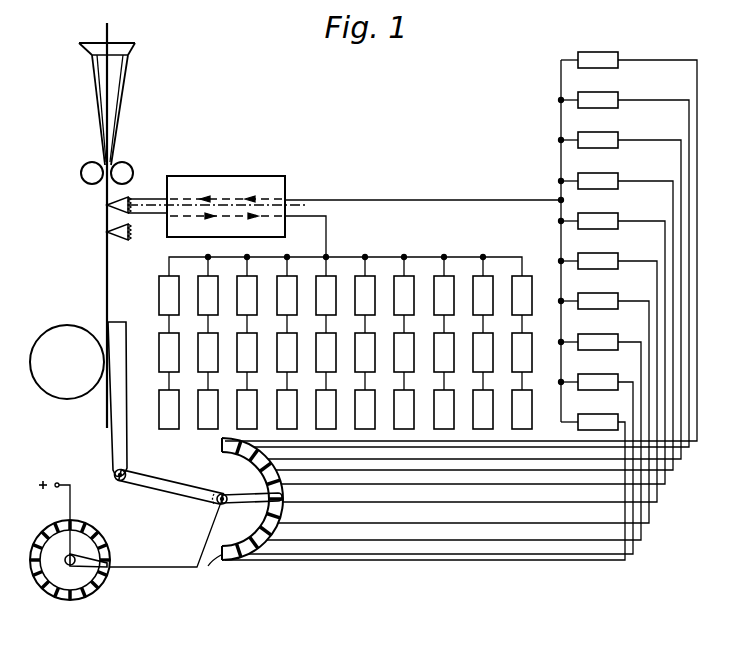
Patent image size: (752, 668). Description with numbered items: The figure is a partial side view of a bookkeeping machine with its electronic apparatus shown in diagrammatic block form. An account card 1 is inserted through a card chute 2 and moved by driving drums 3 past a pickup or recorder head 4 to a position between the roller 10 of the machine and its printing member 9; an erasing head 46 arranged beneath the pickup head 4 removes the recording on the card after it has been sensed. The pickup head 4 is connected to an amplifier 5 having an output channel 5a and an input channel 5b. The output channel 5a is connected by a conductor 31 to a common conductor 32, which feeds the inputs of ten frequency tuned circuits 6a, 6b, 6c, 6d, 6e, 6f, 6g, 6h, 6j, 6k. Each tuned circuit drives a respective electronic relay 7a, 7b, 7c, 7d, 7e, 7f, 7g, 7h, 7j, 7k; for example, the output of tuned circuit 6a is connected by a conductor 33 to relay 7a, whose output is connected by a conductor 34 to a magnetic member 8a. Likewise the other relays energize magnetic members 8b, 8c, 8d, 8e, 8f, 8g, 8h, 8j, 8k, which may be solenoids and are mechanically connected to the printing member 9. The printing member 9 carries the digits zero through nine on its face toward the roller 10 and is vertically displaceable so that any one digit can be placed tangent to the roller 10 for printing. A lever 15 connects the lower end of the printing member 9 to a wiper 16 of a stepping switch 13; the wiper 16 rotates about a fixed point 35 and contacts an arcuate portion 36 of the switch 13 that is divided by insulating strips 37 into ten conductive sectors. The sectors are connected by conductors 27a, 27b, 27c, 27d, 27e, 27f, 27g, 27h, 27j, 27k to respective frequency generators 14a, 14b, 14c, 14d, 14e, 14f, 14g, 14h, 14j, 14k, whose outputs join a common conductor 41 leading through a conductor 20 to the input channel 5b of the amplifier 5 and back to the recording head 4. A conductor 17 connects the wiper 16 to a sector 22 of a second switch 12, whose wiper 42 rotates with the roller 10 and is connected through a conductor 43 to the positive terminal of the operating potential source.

The account card 1 is at (108, 85).
The card chute 2 is at (115, 138).
The driving drums 3 is at (84, 171).
The pickup or recorder head 4 is at (107, 206).
The erasing head 46 is at (116, 236).
The amplifier 5 is at (261, 192).
The output channel 5a is at (196, 225).
The input channel 5b is at (231, 180).
The conductor 20 is at (452, 200).
The conductor 31 is at (329, 227).
The common conductor 32 is at (352, 256).
The conductor 33 is at (168, 323).
The conductor 34 is at (168, 376).
The frequency tuned circuit 6a is at (169, 295).
The frequency tuned circuit 6b is at (208, 286).
The frequency tuned circuit 6c is at (247, 286).
The frequency tuned circuit 6d is at (287, 286).
The frequency tuned circuit 6e is at (326, 286).
The frequency tuned circuit 6f is at (365, 286).
The frequency tuned circuit 6g is at (404, 286).
The frequency tuned circuit 6h is at (444, 286).
The frequency tuned circuit 6j is at (483, 286).
The frequency tuned circuit 6k is at (522, 295).
The electronic relay 7a is at (169, 343).
The electronic relay 7b is at (208, 343).
The electronic relay 7c is at (247, 343).
The electronic relay 7d is at (287, 343).
The electronic relay 7e is at (326, 343).
The electronic relay 7f is at (365, 343).
The electronic relay 7g is at (404, 343).
The electronic relay 7h is at (444, 343).
The electronic relay 7j is at (483, 343).
The electronic relay 7k is at (522, 343).
The magnetic member 8a is at (169, 400).
The magnetic member 8b is at (208, 400).
The magnetic member 8c is at (247, 400).
The magnetic member 8d is at (287, 400).
The magnetic member 8e is at (326, 400).
The magnetic member 8f is at (365, 400).
The magnetic member 8g is at (404, 400).
The magnetic member 8h is at (444, 400).
The magnetic member 8j is at (483, 400).
The magnetic member 8k is at (522, 400).
The common conductor 41 is at (561, 85).
The frequency generator 14a is at (589, 60).
The frequency generator 14b is at (589, 100).
The frequency generator 14c is at (589, 140).
The frequency generator 14d is at (589, 181).
The frequency generator 14e is at (589, 221).
The frequency generator 14f is at (589, 261).
The frequency generator 14g is at (589, 301).
The frequency generator 14h is at (589, 342).
The frequency generator 14j is at (589, 382).
The frequency generator 14k is at (589, 422).
The conductor 27a is at (641, 58).
The conductor 27b is at (639, 99).
The conductor 27c is at (639, 139).
The conductor 27d is at (639, 180).
The conductor 27e is at (637, 220).
The conductor 27f is at (634, 260).
The conductor 27g is at (628, 301).
The conductor 27h is at (353, 541).
The conductor 27j is at (440, 555).
The conductor 27k is at (540, 561).
The printing member 9 is at (116, 326).
The roller 10 is at (76, 386).
The lever 15 is at (172, 490).
The fixed point 35 is at (222, 493).
The wiper 16 is at (248, 503).
The stepping switch 13 is at (238, 487).
The arcuate portion 36 is at (210, 571).
The insulating strips 37 is at (258, 560).
The conductor 17 is at (160, 568).
The sector 22 is at (85, 586).
The second switch 12 is at (83, 547).
The wiper 42 is at (78, 562).
The conductor 43 is at (72, 487).